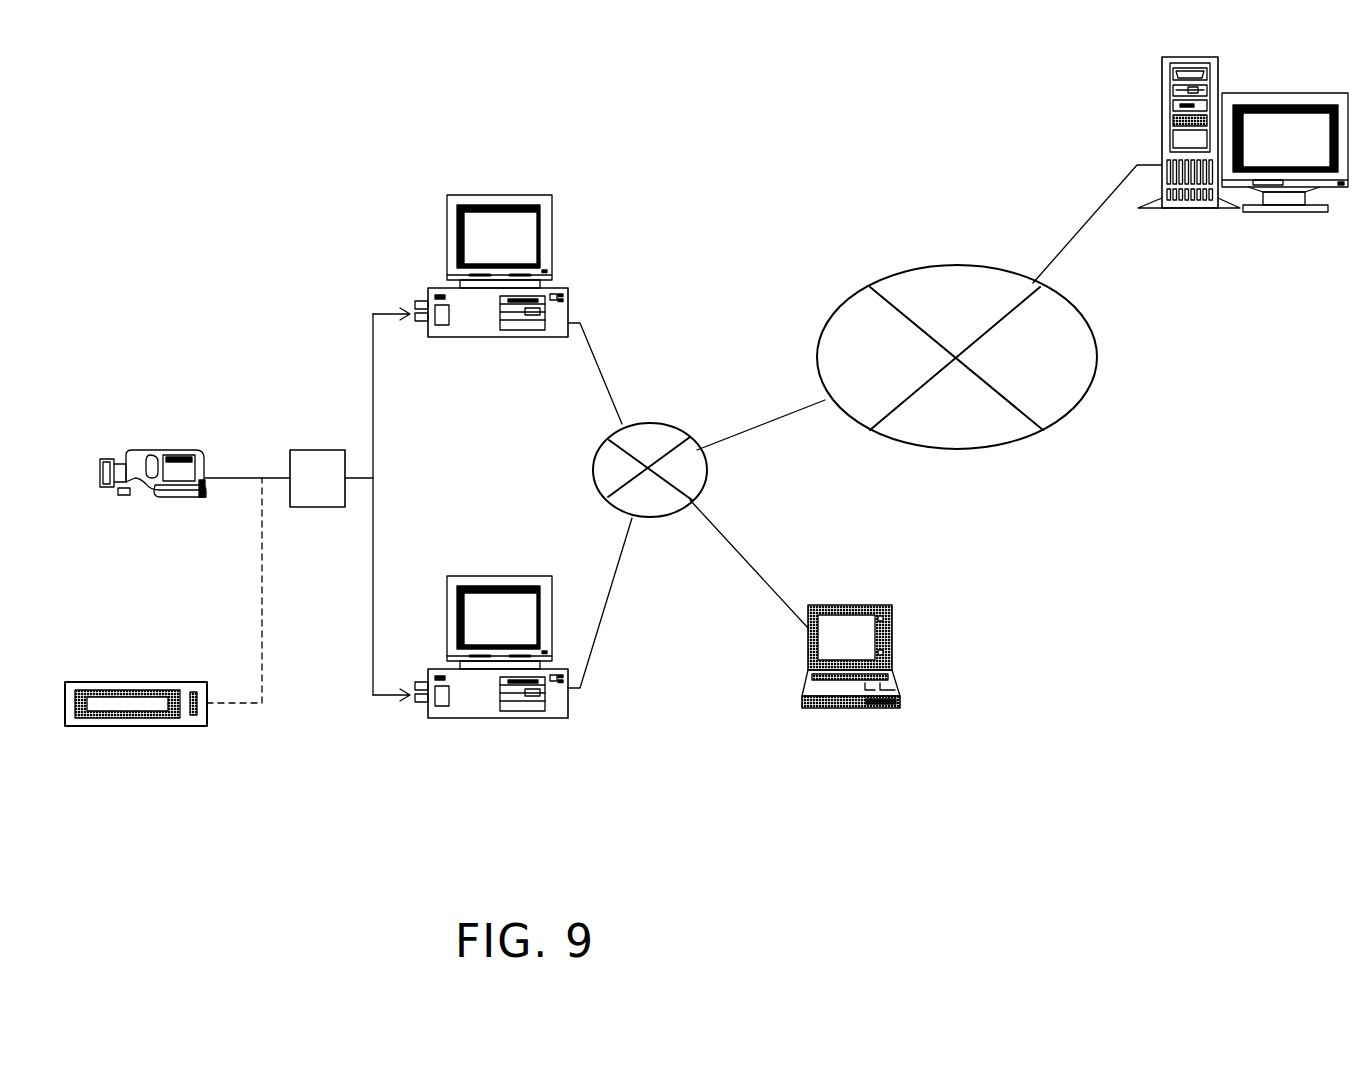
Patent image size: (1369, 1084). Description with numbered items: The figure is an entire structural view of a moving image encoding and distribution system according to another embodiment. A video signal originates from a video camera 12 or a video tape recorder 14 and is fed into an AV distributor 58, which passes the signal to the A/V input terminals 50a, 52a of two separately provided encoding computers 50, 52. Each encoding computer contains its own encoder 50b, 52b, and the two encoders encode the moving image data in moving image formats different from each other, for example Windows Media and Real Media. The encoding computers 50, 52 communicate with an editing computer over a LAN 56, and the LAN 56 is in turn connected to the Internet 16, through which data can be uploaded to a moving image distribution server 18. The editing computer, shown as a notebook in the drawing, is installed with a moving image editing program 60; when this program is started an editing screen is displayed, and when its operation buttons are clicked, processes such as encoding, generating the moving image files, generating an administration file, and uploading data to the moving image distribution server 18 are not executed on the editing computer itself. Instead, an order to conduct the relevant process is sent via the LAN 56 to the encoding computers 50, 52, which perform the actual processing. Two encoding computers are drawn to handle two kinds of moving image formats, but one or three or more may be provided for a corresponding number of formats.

The video camera 12 is at (152, 450).
The video tape recorder 14 is at (140, 682).
The Internet 16 is at (923, 268).
The moving image distribution server 18 is at (1292, 93).
The encoding computer 50 is at (459, 195).
The A/V input terminal 50a is at (420, 298).
The encoder 50b is at (443, 337).
The encoding computer 52 is at (498, 626).
The A/V input terminal 52a is at (410, 703).
The encoder 52b is at (443, 718).
The LAN 56 is at (657, 422).
The AV distributor 58 is at (312, 450).
The moving image editing program 60 is at (903, 690).